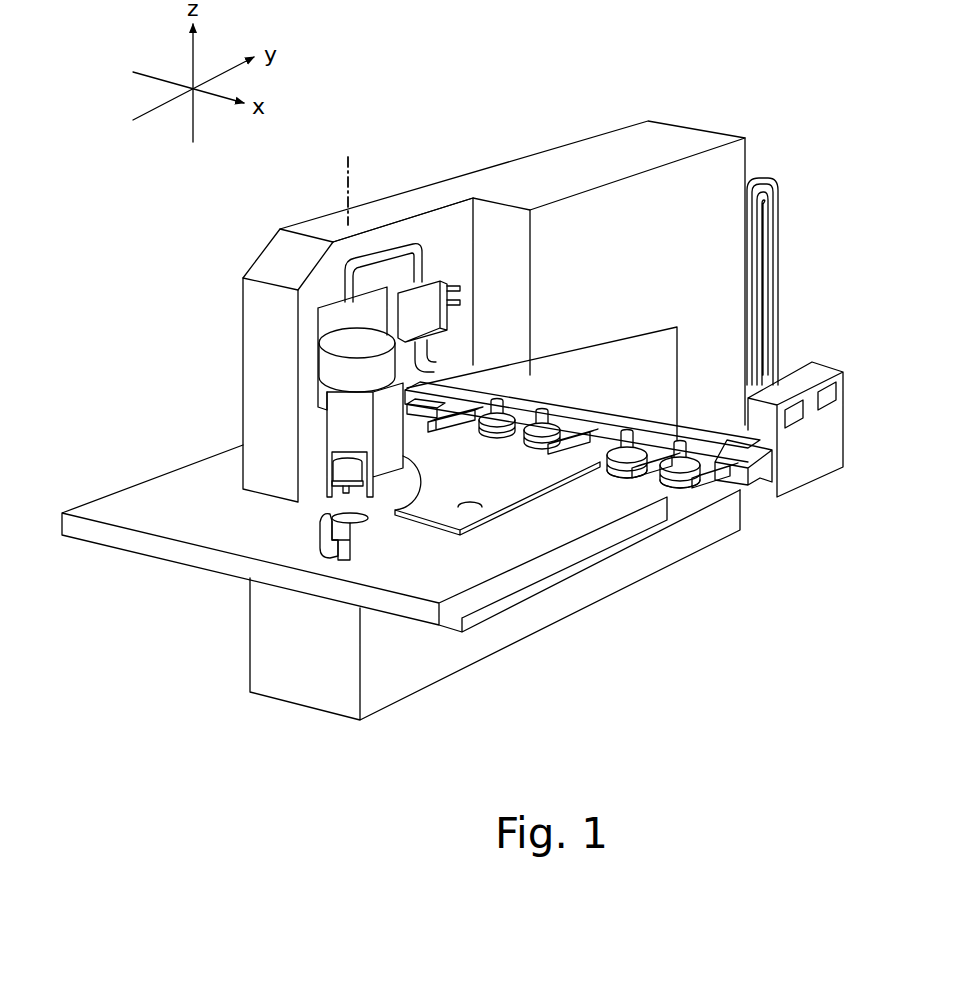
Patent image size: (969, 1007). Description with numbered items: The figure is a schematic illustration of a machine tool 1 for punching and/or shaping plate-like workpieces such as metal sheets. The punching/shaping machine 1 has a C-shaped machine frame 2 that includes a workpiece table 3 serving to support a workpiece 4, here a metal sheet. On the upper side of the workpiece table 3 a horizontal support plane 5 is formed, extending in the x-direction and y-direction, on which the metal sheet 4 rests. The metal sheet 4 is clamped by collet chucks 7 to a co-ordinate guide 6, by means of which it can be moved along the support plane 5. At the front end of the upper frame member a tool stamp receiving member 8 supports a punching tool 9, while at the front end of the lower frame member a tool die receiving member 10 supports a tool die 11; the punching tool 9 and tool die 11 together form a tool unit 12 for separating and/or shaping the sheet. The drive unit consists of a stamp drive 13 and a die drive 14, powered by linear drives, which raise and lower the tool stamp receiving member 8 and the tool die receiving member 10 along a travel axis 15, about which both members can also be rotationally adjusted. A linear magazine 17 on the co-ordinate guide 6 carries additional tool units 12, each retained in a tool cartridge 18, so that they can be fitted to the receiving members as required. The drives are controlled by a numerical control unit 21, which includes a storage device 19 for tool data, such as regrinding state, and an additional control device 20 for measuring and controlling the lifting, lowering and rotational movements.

The machine tool 1 is at (532, 133).
The C-shaped machine frame 2 is at (722, 307).
The workpiece table 3 is at (112, 555).
The workpiece 4 is at (515, 560).
The horizontal support plane 5 is at (130, 499).
The co-ordinate guide 6 is at (766, 492).
The collet chucks 7 is at (613, 484).
The tool stamp receiving member 8 is at (340, 470).
The punching tool 9 is at (340, 488).
The tool die receiving member 10 is at (350, 532).
The tool die 11 is at (358, 506).
The tool unit 12 is at (462, 503).
The stamp drive 13 is at (342, 378).
The die drive 14 is at (332, 540).
The travel axis 15 is at (346, 180).
The linear magazine 17 is at (670, 522).
The tool cartridge 18 is at (436, 392).
The storage device 19 is at (802, 400).
The control device 20 is at (831, 386).
The numerical control unit 21 is at (830, 463).